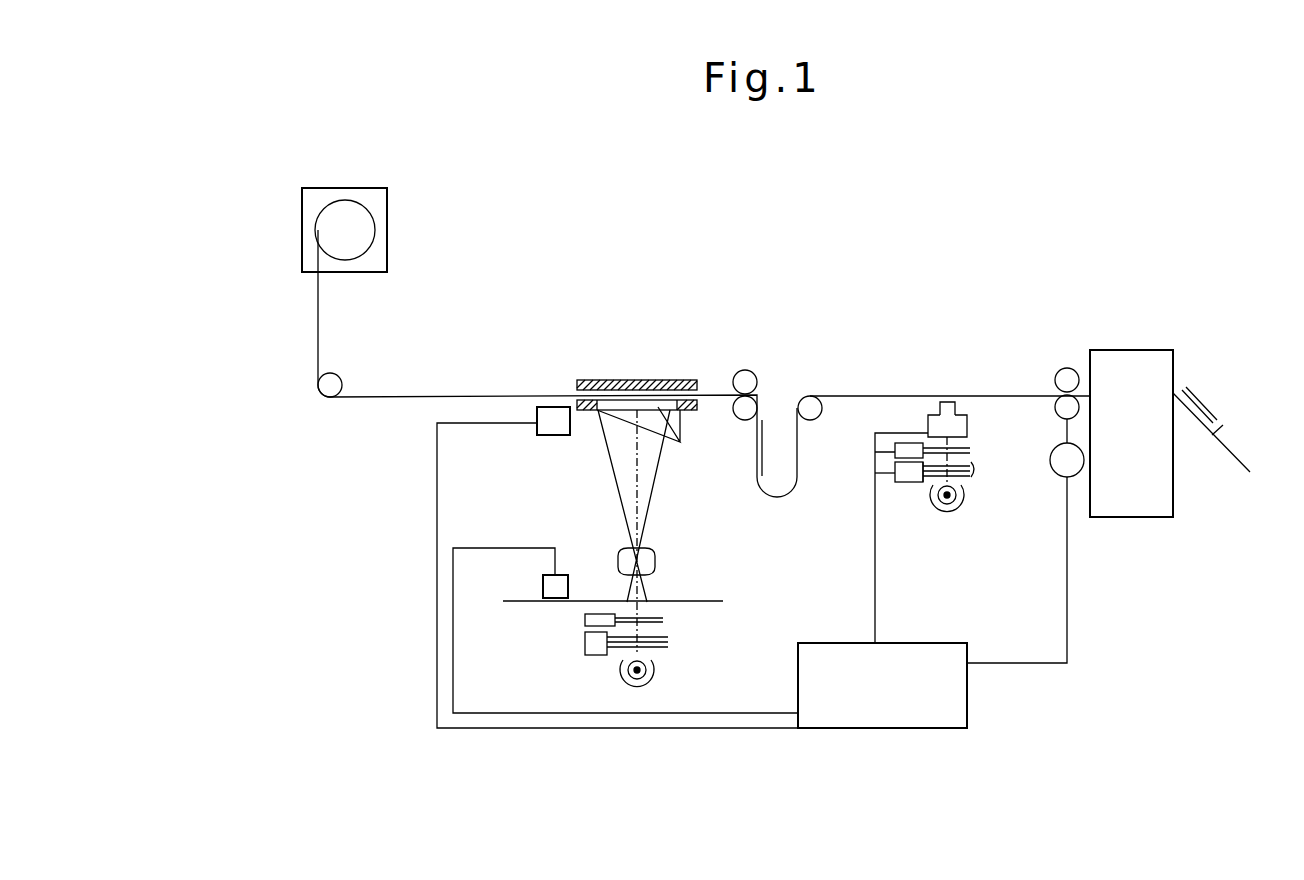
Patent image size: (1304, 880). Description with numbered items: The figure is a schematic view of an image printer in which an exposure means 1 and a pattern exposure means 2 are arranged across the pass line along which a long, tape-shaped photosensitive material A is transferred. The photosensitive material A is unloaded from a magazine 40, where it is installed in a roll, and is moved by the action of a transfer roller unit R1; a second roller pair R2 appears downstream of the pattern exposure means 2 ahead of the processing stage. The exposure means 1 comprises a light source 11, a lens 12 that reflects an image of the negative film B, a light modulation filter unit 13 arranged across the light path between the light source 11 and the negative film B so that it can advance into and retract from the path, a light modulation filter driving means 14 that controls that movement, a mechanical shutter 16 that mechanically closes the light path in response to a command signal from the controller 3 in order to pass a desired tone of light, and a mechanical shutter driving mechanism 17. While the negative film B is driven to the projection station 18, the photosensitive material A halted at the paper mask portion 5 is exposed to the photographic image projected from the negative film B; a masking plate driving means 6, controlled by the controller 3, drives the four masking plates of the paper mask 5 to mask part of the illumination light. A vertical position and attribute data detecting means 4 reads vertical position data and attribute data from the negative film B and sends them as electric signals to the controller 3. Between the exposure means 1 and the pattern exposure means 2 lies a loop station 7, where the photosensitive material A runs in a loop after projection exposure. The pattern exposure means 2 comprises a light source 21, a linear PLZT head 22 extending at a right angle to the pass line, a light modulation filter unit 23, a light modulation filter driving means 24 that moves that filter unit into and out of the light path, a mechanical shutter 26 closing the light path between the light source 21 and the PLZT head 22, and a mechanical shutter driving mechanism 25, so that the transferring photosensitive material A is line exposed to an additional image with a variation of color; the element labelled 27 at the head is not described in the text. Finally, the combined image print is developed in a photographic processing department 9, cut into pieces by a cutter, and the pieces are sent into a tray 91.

The exposure means 1 is at (639, 557).
The pattern exposure means 2 is at (951, 458).
The controller 3 is at (977, 730).
The vertical position and attribute data detecting means 4 is at (542, 585).
The paper mask portion 5 is at (598, 376).
The masking plate driving means 6 is at (535, 428).
The loop station 7 is at (798, 487).
The photographic processing department 9 is at (1180, 346).
The light source 11 is at (625, 678).
The lens 12 is at (655, 560).
The light modulation filter unit 13 is at (668, 643).
The light modulation filter driving means 14 is at (583, 645).
The mechanical shutter 16 is at (665, 620).
The mechanical shutter driving mechanism 17 is at (583, 620).
The projection station 18 is at (663, 590).
The light source 21 is at (957, 505).
The PLZT head 22 is at (930, 415).
The light modulation filter unit 23 is at (977, 470).
The light modulation filter driving means 24 is at (917, 480).
The mechanical shutter driving mechanism 25 is at (910, 457).
The mechanical shutter 26 is at (970, 450).
The detector probe 27 is at (945, 393).
The magazine 40 is at (302, 264).
The tray 91 is at (1223, 445).
The photosensitive material A is at (433, 396).
The negative film B is at (592, 592).
The transfer roller unit R1 is at (748, 370).
The feed rollers R2 is at (1062, 367).